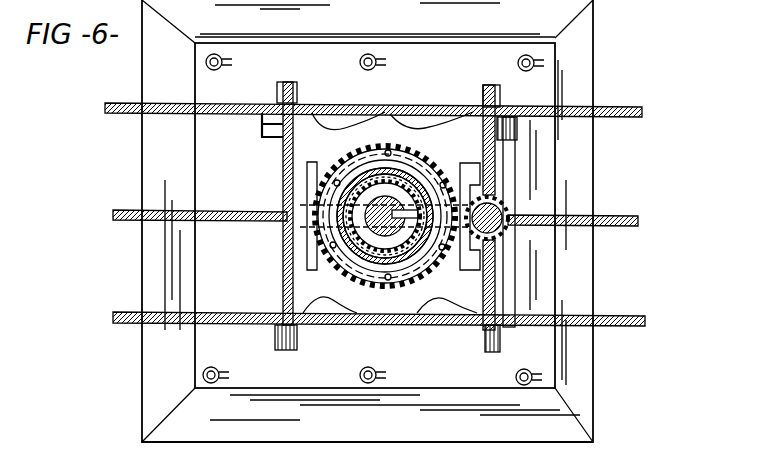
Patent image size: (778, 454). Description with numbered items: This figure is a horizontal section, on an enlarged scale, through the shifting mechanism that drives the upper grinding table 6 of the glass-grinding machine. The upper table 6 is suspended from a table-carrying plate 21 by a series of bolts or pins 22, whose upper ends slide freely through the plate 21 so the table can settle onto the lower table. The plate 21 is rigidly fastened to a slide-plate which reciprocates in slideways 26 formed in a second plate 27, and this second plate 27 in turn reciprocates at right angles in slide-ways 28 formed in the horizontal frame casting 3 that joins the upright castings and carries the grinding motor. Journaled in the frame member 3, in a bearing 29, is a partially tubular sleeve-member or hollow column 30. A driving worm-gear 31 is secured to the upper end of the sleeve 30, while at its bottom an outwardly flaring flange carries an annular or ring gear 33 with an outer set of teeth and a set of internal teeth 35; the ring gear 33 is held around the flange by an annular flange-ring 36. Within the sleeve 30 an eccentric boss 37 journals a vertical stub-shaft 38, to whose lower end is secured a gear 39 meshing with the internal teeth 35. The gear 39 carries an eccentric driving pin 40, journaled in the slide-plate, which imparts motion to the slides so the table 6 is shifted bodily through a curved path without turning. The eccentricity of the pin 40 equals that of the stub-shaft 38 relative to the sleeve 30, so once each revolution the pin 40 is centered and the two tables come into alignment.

The upper shifting or grinding table 6 is at (582, 57).
The horizontal casting 3 is at (613, 109).
The bolts or pins 22 is at (224, 62).
The slide-ways 28 is at (280, 124).
The eccentric driving pin 40 is at (295, 237).
The bearing 29 is at (376, 228).
The second plate 27 is at (474, 106).
The table-carrying plate 21 is at (448, 95).
The annular flange-ring 36 is at (455, 318).
The annular or ring gear 33 is at (345, 163).
The eccentric boss 37 is at (385, 150).
The internal teeth 35 is at (399, 172).
The vertical stub-shaft 38 is at (397, 200).
The sleeve-member or hollow column 30 is at (390, 232).
The driving worm-gear 31 is at (385, 280).
The gear 39 is at (438, 270).
The slideways 26 is at (450, 168).